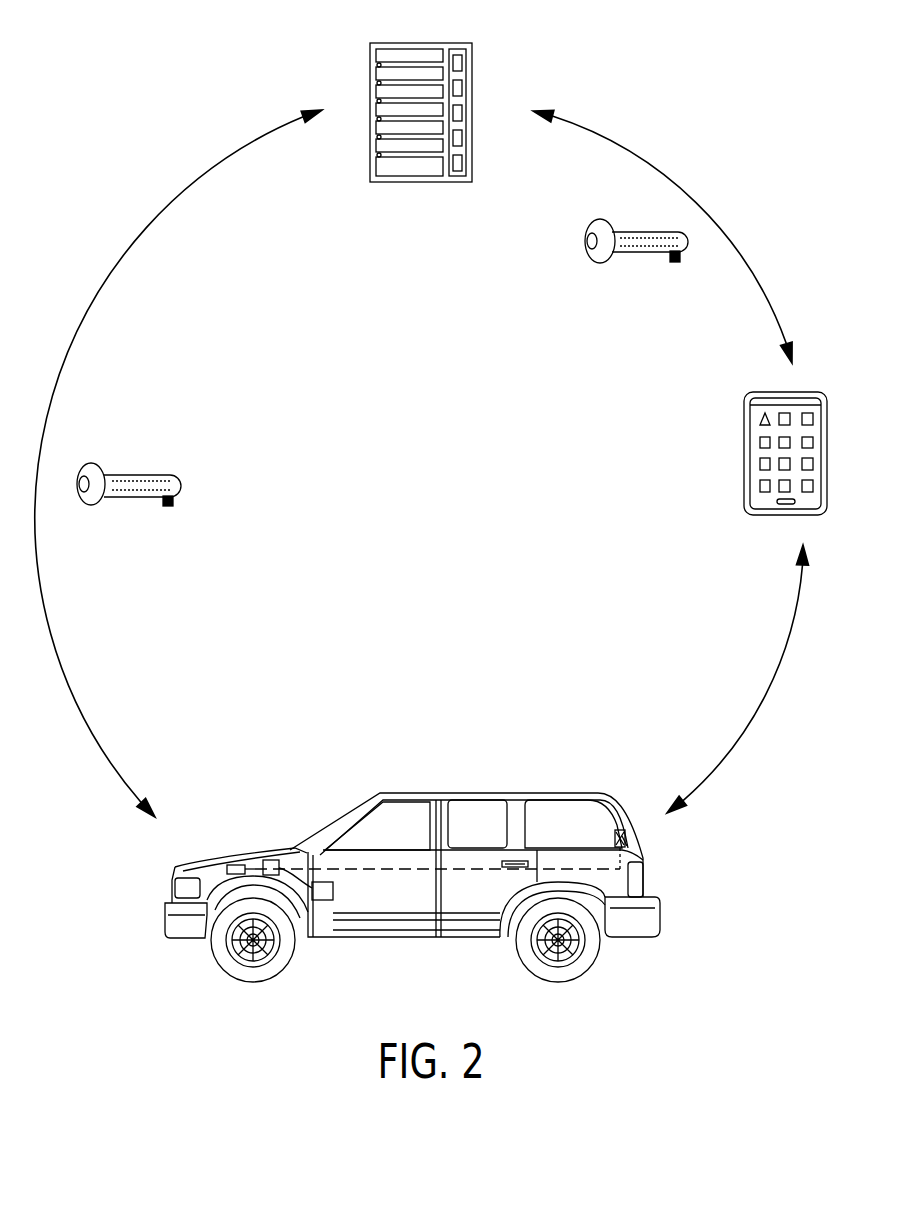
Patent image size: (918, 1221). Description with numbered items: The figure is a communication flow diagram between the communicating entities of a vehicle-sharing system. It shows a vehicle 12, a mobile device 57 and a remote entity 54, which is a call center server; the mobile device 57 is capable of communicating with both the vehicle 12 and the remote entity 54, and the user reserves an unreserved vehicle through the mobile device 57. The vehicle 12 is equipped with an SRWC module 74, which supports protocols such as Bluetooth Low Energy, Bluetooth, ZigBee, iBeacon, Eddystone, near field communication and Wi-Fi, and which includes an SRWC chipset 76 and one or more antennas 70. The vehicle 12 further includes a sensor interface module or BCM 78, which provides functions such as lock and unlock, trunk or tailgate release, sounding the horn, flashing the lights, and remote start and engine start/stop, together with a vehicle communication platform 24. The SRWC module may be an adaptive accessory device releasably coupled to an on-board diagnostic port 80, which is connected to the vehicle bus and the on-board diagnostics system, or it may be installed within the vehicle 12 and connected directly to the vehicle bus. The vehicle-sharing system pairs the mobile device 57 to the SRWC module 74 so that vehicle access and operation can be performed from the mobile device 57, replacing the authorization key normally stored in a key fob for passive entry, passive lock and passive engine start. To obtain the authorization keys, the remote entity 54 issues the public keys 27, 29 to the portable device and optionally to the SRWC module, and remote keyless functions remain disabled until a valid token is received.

The vehicle 12 is at (418, 938).
The vehicle communication platform (VCP) 24 is at (226, 868).
The public key 27 is at (652, 253).
The public key 29 is at (153, 473).
The remote entity 54 is at (410, 183).
The mobile device 57 is at (744, 476).
The antennas 70 is at (618, 830).
The SRWC module 74 is at (628, 832).
The SRWC chipset 76 is at (628, 841).
The sensor interface module (BCM) 78 is at (263, 862).
The on-board diagnostic (OBD) port 80 is at (323, 901).